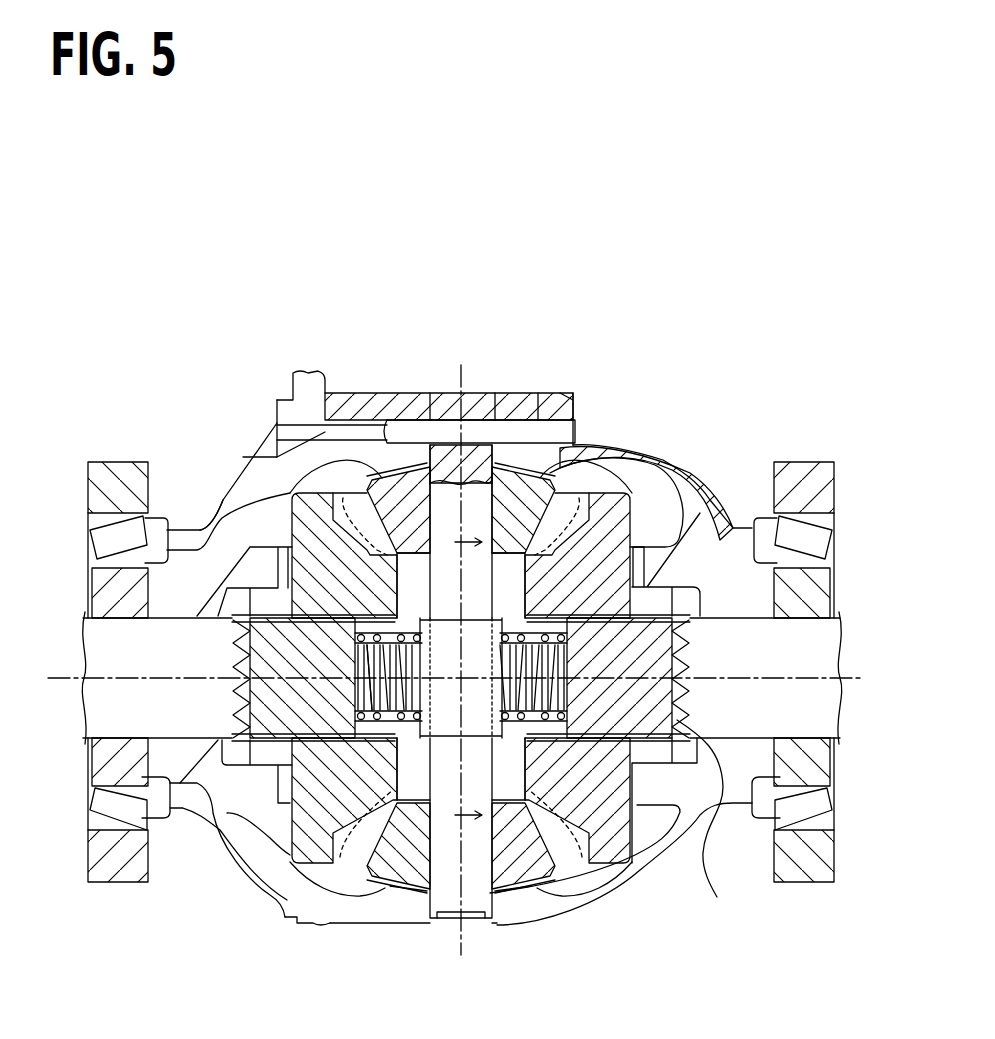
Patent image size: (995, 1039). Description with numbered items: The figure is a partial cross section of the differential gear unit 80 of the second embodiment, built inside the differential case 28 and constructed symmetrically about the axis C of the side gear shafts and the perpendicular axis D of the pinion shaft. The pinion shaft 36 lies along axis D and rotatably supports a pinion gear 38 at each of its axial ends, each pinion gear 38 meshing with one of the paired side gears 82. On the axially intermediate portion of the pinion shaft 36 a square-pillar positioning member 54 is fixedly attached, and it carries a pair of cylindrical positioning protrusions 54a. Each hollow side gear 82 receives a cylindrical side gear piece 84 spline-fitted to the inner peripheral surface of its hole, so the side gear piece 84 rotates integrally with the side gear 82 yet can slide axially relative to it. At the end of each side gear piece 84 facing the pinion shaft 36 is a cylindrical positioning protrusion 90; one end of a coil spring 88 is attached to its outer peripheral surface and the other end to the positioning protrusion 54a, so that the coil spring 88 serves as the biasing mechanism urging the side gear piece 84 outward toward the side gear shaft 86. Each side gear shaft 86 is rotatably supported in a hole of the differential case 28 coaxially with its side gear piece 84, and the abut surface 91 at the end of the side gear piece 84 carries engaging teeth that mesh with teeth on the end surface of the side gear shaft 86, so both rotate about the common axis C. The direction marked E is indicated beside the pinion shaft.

The differential gear unit 80 is at (660, 345).
The differential case 28 is at (212, 533).
The side gear 82 is at (303, 527).
The side gear piece 84 is at (230, 883).
The side gear shaft 86 is at (120, 702).
The coil spring 88 is at (370, 560).
The positioning protrusion 90 is at (312, 740).
The abut surface 91 is at (461, 692).
The pinion shaft 36 is at (440, 907).
The pinion gear 38 is at (533, 887).
The positioning member 54 is at (560, 887).
The positioning protrusion 54a is at (393, 850).
The axis C is at (858, 680).
The axis D is at (461, 372).
The direction arrow E is at (459, 678).